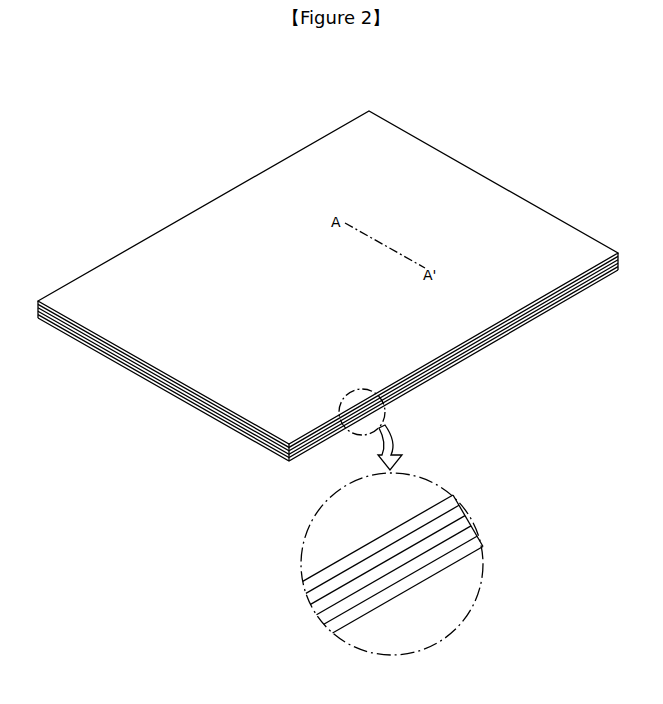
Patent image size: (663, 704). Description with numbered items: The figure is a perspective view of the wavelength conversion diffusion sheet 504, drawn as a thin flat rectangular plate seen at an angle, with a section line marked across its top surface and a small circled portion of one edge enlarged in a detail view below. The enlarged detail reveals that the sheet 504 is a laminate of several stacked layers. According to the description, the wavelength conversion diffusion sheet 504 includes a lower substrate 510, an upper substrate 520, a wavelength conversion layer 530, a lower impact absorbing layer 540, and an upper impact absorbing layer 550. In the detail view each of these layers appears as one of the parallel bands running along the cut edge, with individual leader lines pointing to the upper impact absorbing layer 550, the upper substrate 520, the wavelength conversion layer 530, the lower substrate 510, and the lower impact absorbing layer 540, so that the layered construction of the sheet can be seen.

The wavelength conversion diffusion sheet 504 is at (148, 96).
The upper impact absorbing layer 550 is at (437, 505).
The upper substrate 520 is at (468, 516).
The wavelength conversion layer 530 is at (474, 528).
The lower substrate 510 is at (479, 534).
The lower impact absorbing layer 540 is at (486, 544).